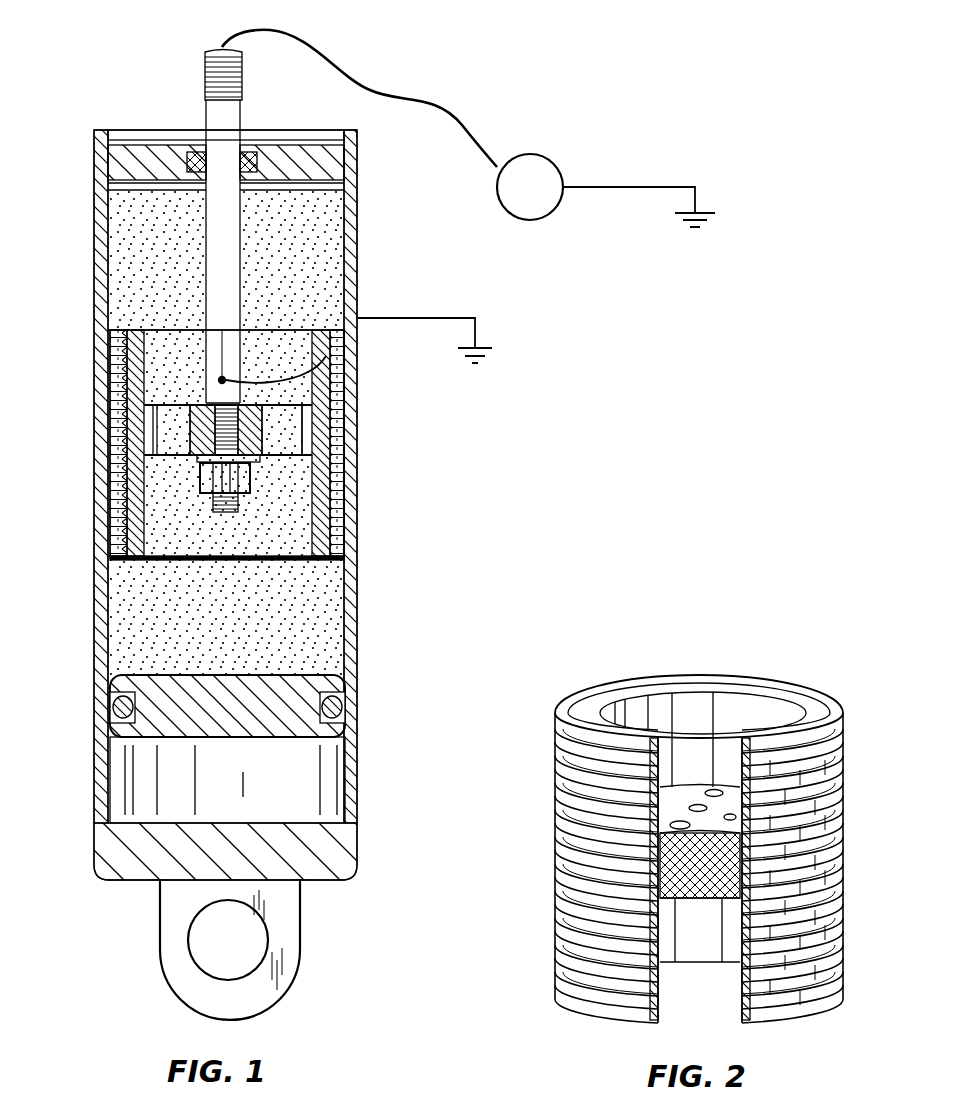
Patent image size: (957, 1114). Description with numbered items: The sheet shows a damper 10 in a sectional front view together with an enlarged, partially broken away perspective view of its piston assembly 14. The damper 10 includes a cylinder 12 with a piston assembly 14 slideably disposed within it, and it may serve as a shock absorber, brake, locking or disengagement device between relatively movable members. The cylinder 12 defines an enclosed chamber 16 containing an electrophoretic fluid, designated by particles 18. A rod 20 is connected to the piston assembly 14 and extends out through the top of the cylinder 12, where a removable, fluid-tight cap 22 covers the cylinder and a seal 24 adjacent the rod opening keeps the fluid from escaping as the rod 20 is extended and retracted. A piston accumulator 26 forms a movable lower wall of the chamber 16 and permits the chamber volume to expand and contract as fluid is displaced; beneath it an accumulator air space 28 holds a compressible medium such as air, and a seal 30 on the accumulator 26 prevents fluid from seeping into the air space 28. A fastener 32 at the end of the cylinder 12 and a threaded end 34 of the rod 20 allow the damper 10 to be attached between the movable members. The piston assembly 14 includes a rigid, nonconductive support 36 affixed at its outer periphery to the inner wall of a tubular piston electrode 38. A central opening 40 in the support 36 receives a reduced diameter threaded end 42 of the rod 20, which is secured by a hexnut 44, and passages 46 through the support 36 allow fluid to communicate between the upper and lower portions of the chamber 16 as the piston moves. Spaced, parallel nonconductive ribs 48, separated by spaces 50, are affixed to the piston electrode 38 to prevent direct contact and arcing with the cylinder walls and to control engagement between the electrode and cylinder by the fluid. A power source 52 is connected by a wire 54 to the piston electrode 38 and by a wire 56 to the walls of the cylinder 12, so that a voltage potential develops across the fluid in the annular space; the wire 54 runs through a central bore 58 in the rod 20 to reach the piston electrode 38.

In FIG. 1, the damper 10 is at (132, 80).
In FIG. 1, the cylinder 12 is at (356, 600).
In FIG. 1, the piston assembly 14 is at (332, 325).
In FIG. 2, the piston assembly 14 is at (668, 655).
In FIG. 1, the enclosed chamber 16 is at (150, 250).
In FIG. 1, the particles 18 is at (125, 302).
In FIG. 1, the rod 20 is at (242, 122).
In FIG. 1, the cap 22 is at (138, 138).
In FIG. 1, the seal 24 is at (188, 150).
In FIG. 1, the piston accumulator 26 is at (352, 670).
In FIG. 1, the accumulator air space 28 is at (262, 787).
In FIG. 1, the seal 30 is at (346, 706).
In FIG. 1, the fastener 32 is at (292, 933).
In FIG. 1, the threaded end 34 is at (203, 66).
In FIG. 1, the rigid support 36 is at (143, 390).
In FIG. 2, the rigid support 36 is at (720, 840).
In FIG. 1, the tubular piston electrode 38 is at (134, 481).
In FIG. 2, the tubular piston electrode 38 is at (780, 693).
In FIG. 1, the opening 40 is at (253, 473).
In FIG. 2, the opening 40 is at (698, 805).
In FIG. 1, the threaded end 42 is at (110, 543).
In FIG. 1, the hexnut 44 is at (353, 488).
In FIG. 1, the passages 46 is at (140, 437).
In FIG. 2, the passages 46 is at (678, 820).
In FIG. 1, the ribs 48 is at (110, 512).
In FIG. 2, the ribs 48 is at (835, 715).
In FIG. 1, the spaces 50 is at (110, 415).
In FIG. 2, the spaces 50 is at (837, 760).
In FIG. 1, the power source 52 is at (552, 152).
In FIG. 1, the wire 54 is at (447, 118).
In FIG. 1, the wire 56 is at (617, 188).
In FIG. 1, the central bore 58 is at (221, 47).